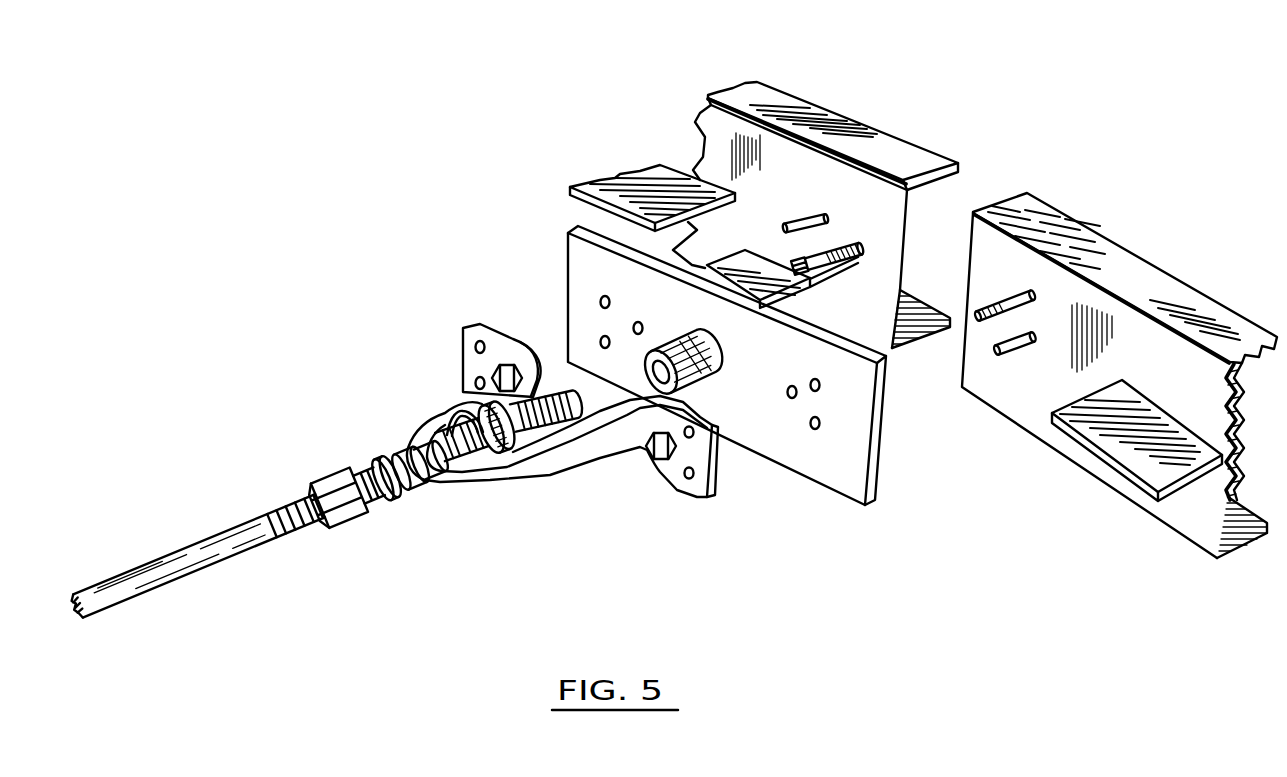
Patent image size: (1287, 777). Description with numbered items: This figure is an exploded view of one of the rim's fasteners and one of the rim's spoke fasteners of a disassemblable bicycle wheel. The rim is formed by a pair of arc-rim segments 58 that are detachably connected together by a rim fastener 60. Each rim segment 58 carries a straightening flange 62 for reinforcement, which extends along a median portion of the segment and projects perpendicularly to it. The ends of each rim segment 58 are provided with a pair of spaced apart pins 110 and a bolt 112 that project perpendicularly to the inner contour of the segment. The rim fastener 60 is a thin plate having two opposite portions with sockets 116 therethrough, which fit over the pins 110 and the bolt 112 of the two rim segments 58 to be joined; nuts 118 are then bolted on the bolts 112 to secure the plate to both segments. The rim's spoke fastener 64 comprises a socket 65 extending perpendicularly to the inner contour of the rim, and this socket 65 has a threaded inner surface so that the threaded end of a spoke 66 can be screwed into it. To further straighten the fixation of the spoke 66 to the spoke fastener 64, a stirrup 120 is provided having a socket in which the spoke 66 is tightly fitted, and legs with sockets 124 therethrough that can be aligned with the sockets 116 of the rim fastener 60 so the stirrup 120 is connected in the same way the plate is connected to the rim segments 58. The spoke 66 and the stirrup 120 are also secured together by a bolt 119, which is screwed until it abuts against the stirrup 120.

The arc-rim segment 58 is at (1063, 247).
The rim fastener 60 is at (850, 443).
The straightening flange 62 is at (628, 190).
The spoke fastener 64 is at (436, 305).
The socket 65 is at (703, 385).
The spoke 66 is at (210, 547).
The pin 110 is at (808, 252).
The bolt 112 is at (856, 242).
The socket 116 is at (600, 340).
The nut 118 is at (473, 370).
The bolt 119 is at (360, 513).
The stirrup 120 is at (750, 273).
The socket 124 is at (690, 479).